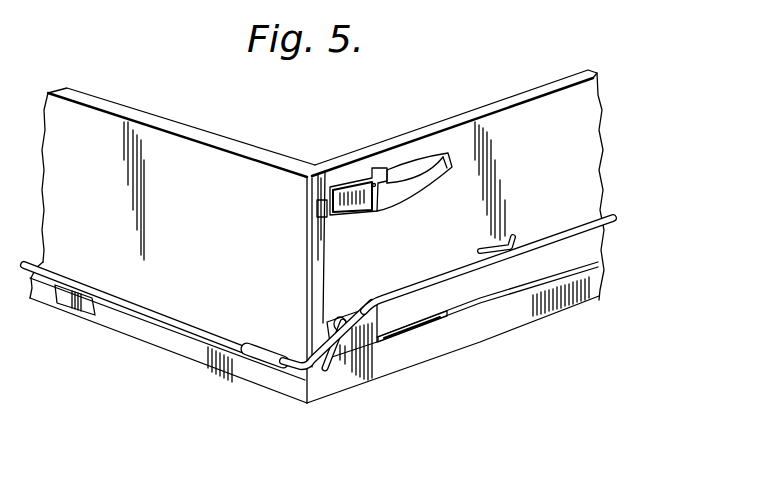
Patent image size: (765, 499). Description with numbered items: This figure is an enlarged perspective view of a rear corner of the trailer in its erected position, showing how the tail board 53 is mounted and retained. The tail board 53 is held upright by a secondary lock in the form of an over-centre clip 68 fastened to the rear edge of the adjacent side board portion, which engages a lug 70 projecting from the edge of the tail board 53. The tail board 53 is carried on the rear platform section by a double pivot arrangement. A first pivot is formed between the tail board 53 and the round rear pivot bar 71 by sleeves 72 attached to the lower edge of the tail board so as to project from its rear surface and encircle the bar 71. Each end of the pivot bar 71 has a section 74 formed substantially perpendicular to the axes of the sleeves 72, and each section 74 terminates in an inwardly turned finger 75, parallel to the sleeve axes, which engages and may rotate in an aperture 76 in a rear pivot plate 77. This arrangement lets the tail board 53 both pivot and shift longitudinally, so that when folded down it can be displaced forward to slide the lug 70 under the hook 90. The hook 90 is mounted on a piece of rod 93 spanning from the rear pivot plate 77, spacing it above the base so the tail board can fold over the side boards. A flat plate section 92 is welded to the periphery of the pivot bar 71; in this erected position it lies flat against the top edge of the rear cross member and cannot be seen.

The tail board 53 is at (222, 163).
The over-centre clip 68 is at (401, 171).
The lug 70 is at (321, 196).
The rear pivot bar 71 is at (232, 345).
The sleeve 72 is at (270, 365).
The pivot bar end section 74 is at (310, 372).
The inwardly turned finger 75 is at (348, 308).
The aperture 76 is at (337, 318).
The rear pivot plate 77 is at (373, 343).
The hook 90 is at (508, 243).
The flat plate section 92 is at (72, 303).
The rod piece 93 is at (467, 272).